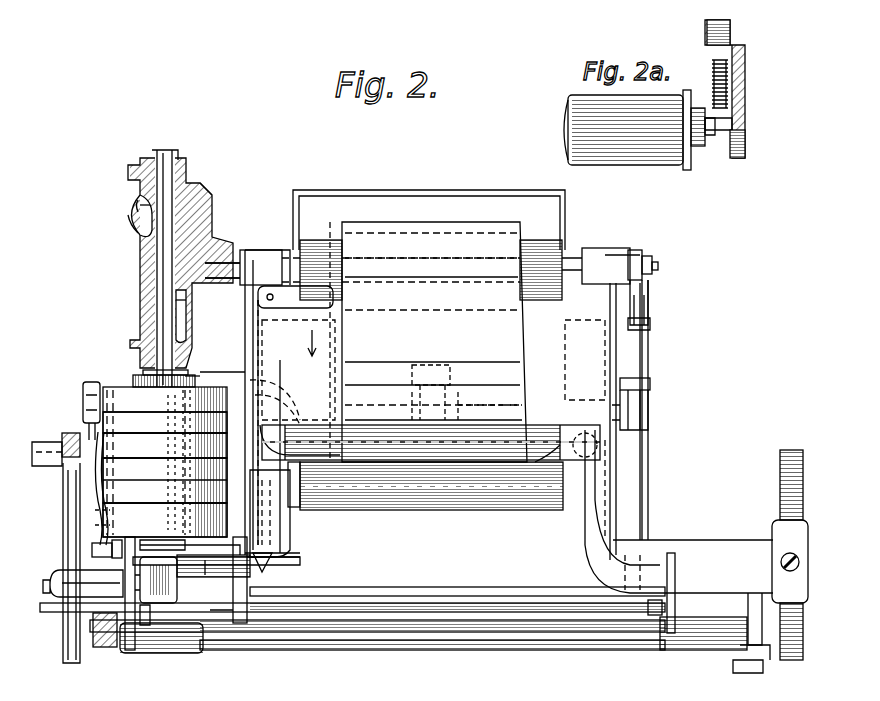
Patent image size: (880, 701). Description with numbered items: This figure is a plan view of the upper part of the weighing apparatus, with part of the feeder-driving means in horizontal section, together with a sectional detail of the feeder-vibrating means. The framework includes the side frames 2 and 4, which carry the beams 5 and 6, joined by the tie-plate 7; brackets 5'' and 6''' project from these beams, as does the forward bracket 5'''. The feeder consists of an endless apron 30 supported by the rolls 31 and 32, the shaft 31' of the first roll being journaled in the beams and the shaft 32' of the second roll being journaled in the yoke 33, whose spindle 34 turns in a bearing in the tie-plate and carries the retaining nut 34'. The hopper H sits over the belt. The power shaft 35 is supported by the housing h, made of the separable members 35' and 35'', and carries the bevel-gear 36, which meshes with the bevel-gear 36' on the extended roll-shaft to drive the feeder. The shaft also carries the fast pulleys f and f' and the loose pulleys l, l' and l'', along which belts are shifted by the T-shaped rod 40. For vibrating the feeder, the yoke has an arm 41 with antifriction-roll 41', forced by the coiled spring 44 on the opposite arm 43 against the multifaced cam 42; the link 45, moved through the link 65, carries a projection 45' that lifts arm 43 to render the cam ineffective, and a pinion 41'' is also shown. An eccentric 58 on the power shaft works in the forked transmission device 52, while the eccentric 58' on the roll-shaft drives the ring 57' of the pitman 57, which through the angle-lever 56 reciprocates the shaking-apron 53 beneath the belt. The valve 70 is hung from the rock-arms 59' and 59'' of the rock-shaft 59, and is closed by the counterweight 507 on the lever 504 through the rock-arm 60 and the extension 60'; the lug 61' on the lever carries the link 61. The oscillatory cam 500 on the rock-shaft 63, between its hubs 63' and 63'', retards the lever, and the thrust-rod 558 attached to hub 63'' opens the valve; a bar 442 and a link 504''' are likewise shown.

In FIG. 2, the side frame 2 is at (790, 453).
In FIG. 2, the side frame 4 is at (65, 494).
In FIG. 2, the beam 5 is at (679, 511).
In FIG. 2A, the beam 5 is at (730, 90).
In FIG. 2, the bracket 5'' is at (644, 638).
In FIG. 2, the bracket 5''' is at (748, 604).
In FIG. 2, the beam 6 is at (286, 389).
In FIG. 2, the bracket 6''' is at (91, 650).
In FIG. 2, the tie-plate 7 is at (478, 404).
In FIG. 2, the endless band or apron 30 is at (560, 360).
In FIG. 2, the roll 31 is at (443, 249).
In FIG. 2, the shaft 31' is at (417, 251).
In FIG. 2, the roll 32 is at (431, 496).
In FIG. 2A, the roll 32 is at (627, 130).
In FIG. 2, the shaft 32' is at (305, 498).
In FIG. 2A, the shaft 32' is at (693, 158).
In FIG. 2, the yoke 33 is at (365, 430).
In FIG. 2A, the yoke 33 is at (696, 108).
In FIG. 2, the spindle or pivot 34 is at (420, 389).
In FIG. 2, the nut 34' is at (445, 361).
In FIG. 2, the power or pulley-supporting shaft 35 is at (184, 255).
In FIG. 2, the housing member 35' is at (111, 200).
In FIG. 2, the housing member 35'' is at (226, 194).
In FIG. 2, the bevel-gear 36 is at (113, 215).
In FIG. 2, the bevel-gear 36' is at (145, 293).
In FIG. 2, the T-shaped rod 40 is at (65, 440).
In FIG. 2, the arm 41 is at (222, 346).
In FIG. 2, the antifriction-roll 41' is at (199, 363).
In FIG. 2, the pinion 41'' is at (164, 381).
In FIG. 2, the multifaced cam 42 is at (146, 378).
In FIG. 2A, the arm 43 is at (716, 130).
In FIG. 2A, the coiled spring 44 is at (722, 90).
In FIG. 2, the link 45 is at (645, 408).
In FIG. 2, the projection 45' is at (644, 374).
In FIG. 2, the transmission device 52 is at (195, 569).
In FIG. 2, the shaking-apron 53 is at (478, 192).
In FIG. 2, the angle-lever 56 is at (650, 312).
In FIG. 2, the pitman 57 is at (659, 299).
In FIG. 2, the ring 57' is at (639, 248).
In FIG. 2, the cam or eccentric 58 is at (79, 590).
In FIG. 2, the cam or eccentric 58' is at (665, 249).
In FIG. 2, the rock-shaft 59 is at (457, 588).
In FIG. 2, the rock-arm 59' is at (352, 637).
In FIG. 2, the rock-arm 59'' is at (257, 600).
In FIG. 2, the rock-arm 60 is at (106, 593).
In FIG. 2, the hub or extension 60' is at (273, 567).
In FIG. 2, the link 61 is at (69, 488).
In FIG. 2, the lug or ear 61' is at (77, 547).
In FIG. 2, the rock-shaft 63 is at (377, 652).
In FIG. 2, the hub 63' is at (161, 655).
In FIG. 2, the hub 63'' is at (703, 653).
In FIG. 2, the link 65 is at (650, 468).
In FIG. 2, the valve 70 is at (402, 650).
In FIG. 2, the bar 442 is at (676, 608).
In FIG. 2, the oscillatory cam 500 is at (130, 607).
In FIG. 2, the lever 504 is at (64, 522).
In FIG. 2, the link 504''' is at (150, 639).
In FIG. 2, the counterweight 507 is at (88, 393).
In FIG. 2, the connecting-rod 558 is at (752, 672).
In FIG. 2, the supply chute or hopper H is at (434, 342).
In FIG. 2, the housing or journal-boxing h is at (125, 231).
In FIG. 2, the fast pulley f is at (165, 520).
In FIG. 2, the fast pulley f' is at (165, 422).
In FIG. 2, the loose pulley l is at (165, 480).
In FIG. 2, the loose pulley l' is at (165, 445).
In FIG. 2, the loose pulley l'' is at (165, 462).